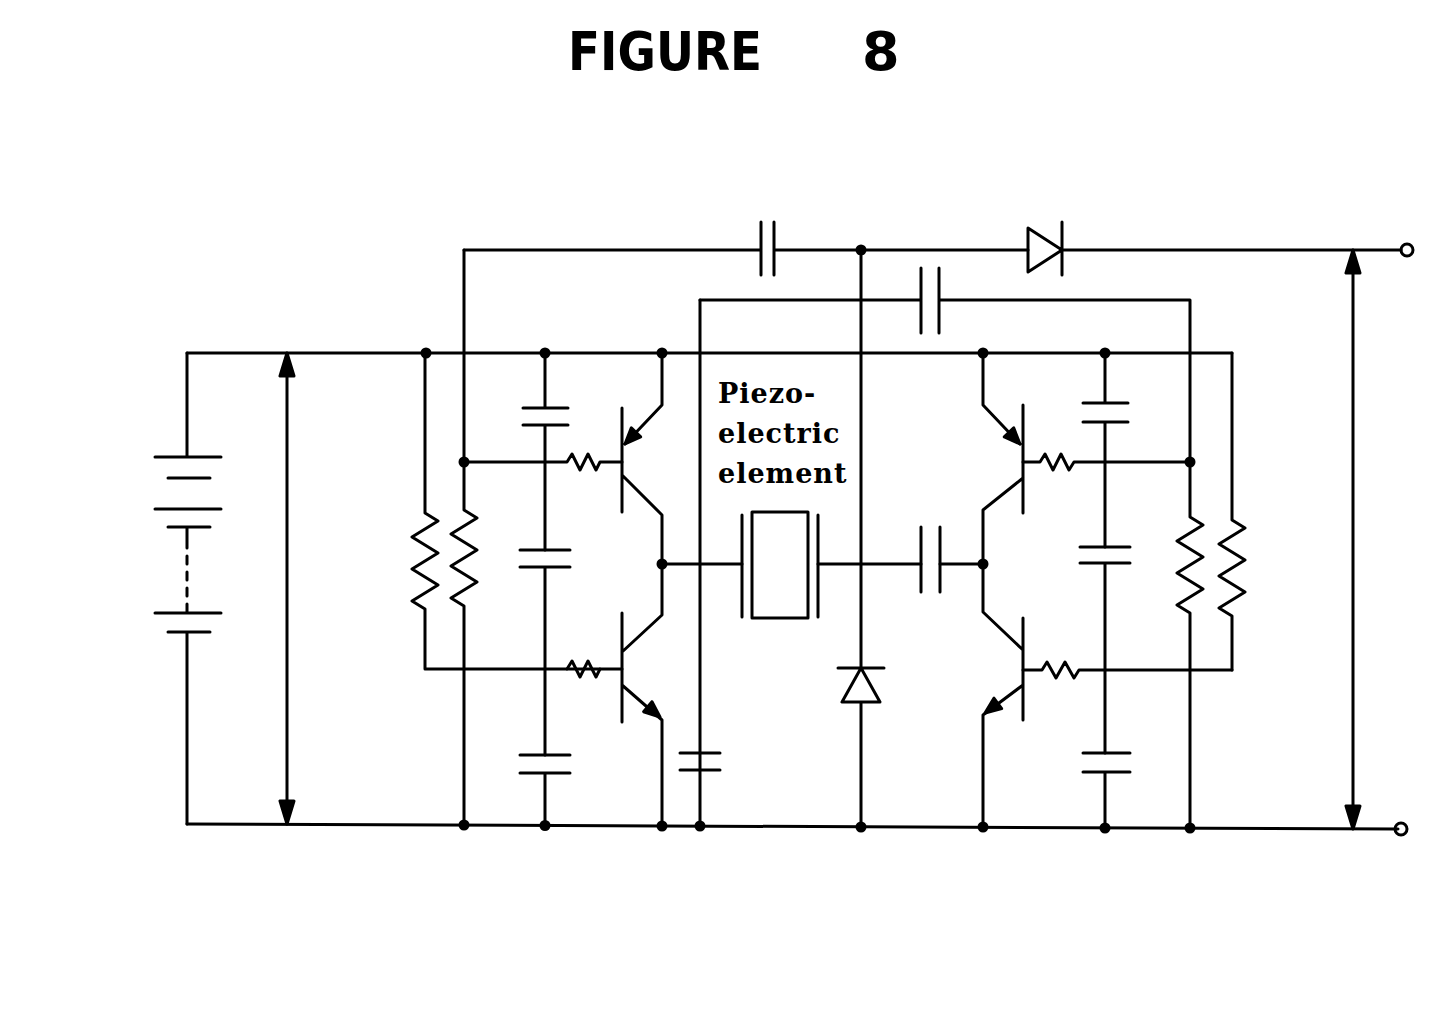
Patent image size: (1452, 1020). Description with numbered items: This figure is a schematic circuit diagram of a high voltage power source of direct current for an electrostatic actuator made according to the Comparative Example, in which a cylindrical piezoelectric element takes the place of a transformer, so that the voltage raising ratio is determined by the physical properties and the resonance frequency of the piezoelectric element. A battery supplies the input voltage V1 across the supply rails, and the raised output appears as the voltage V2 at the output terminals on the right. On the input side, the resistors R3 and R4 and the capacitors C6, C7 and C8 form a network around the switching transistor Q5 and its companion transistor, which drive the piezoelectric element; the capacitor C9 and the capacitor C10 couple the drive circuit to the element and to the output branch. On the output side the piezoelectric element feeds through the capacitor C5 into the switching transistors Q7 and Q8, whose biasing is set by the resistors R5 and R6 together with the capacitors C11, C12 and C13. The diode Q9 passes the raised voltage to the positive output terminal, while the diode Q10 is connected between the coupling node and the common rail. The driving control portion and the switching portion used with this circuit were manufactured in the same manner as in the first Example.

The battery supply voltage V1 is at (290, 588).
The output voltage V2 is at (1344, 539).
The resistor R3 is at (493, 511).
The resistor R4 is at (492, 537).
The resistor R5 is at (1166, 645).
The resistor R6 is at (1260, 511).
The capacitor C5 is at (932, 536).
The capacitor C6 is at (562, 451).
The capacitor C7 is at (573, 647).
The capacitor C8 is at (571, 785).
The capacitor C9 is at (727, 563).
The capacitor C10 is at (746, 234).
The capacitor C11 is at (1143, 450).
The capacitor C12 is at (1074, 644).
The capacitor C13 is at (1143, 776).
The switching transistor Q5 is at (636, 458).
The switching transistor Q7 is at (1022, 458).
The switching transistor Q8 is at (1022, 695).
The diode Q9 is at (1076, 237).
The diode Q10 is at (898, 538).